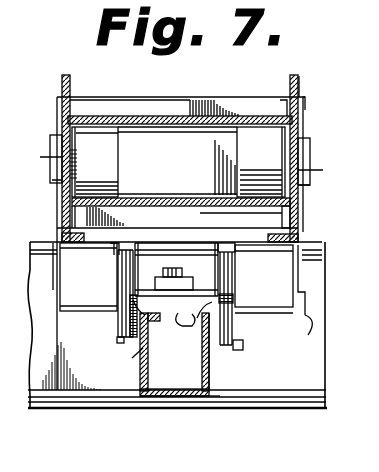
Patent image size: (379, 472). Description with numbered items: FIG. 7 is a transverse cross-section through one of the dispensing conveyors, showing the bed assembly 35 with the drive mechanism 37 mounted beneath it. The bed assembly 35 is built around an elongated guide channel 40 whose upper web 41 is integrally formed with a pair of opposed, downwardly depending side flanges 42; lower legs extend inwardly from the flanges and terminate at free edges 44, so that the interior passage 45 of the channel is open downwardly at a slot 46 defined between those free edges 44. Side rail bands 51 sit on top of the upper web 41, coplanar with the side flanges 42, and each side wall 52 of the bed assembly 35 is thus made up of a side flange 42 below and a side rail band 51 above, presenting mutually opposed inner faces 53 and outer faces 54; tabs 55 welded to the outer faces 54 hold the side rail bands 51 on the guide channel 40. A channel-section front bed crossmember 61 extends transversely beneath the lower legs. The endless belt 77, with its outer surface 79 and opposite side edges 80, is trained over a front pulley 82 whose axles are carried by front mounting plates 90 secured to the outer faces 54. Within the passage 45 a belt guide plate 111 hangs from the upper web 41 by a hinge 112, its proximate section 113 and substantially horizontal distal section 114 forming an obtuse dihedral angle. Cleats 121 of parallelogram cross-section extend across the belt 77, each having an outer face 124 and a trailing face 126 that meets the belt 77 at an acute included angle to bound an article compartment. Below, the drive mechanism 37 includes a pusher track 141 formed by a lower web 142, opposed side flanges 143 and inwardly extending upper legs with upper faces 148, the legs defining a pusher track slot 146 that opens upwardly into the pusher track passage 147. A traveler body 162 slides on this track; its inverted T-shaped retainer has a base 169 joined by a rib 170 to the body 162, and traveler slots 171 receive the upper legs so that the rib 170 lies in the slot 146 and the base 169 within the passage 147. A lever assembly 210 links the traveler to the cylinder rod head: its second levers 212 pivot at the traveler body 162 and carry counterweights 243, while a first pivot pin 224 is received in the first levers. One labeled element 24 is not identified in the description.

The base 24 is at (327, 252).
The bed assembly 35 is at (299, 76).
The drive mechanism 37 is at (237, 344).
The guide channel 40 is at (303, 118).
The upper web 41 is at (104, 116).
The side flanges 42 is at (58, 200).
The free edges 44 is at (258, 228).
The interior passage 45 is at (72, 150).
The slot 46 is at (113, 250).
The side rail bands 51 is at (62, 80).
The side walls 52 is at (50, 138).
The inner faces 53 is at (285, 150).
The outer faces 54 is at (310, 150).
The tabs 55 is at (305, 97).
The front bed crossmember 61 is at (299, 329).
The endless belt 77 is at (271, 116).
The outer surface 79 is at (176, 116).
The side edges 80 is at (57, 112).
The front pulley 82 is at (180, 165).
The front mounting plates 90 is at (52, 180).
The belt guide plate 111 is at (202, 210).
The hinge 112 is at (220, 133).
The proximate section 113 is at (177, 149).
The distal section 114 is at (185, 194).
The cleats 121 is at (232, 97).
The outer face 124 is at (178, 230).
The trailing face 126 is at (130, 108).
The pusher track 141 is at (213, 397).
The lower web 142 is at (182, 397).
The side flanges 143 is at (210, 385).
The pusher track slot 146 is at (192, 324).
The pusher track passage 147 is at (202, 381).
The upper faces 148 is at (118, 297).
The traveler body 162 is at (205, 290).
The retainer base 169 is at (124, 363).
The rib 170 is at (176, 310).
The traveler slots 171 is at (233, 292).
The lever assembly 210 is at (222, 245).
The second levers 212 is at (117, 280).
The first pivot pin 224 is at (238, 252).
The counterweights 243 is at (117, 340).